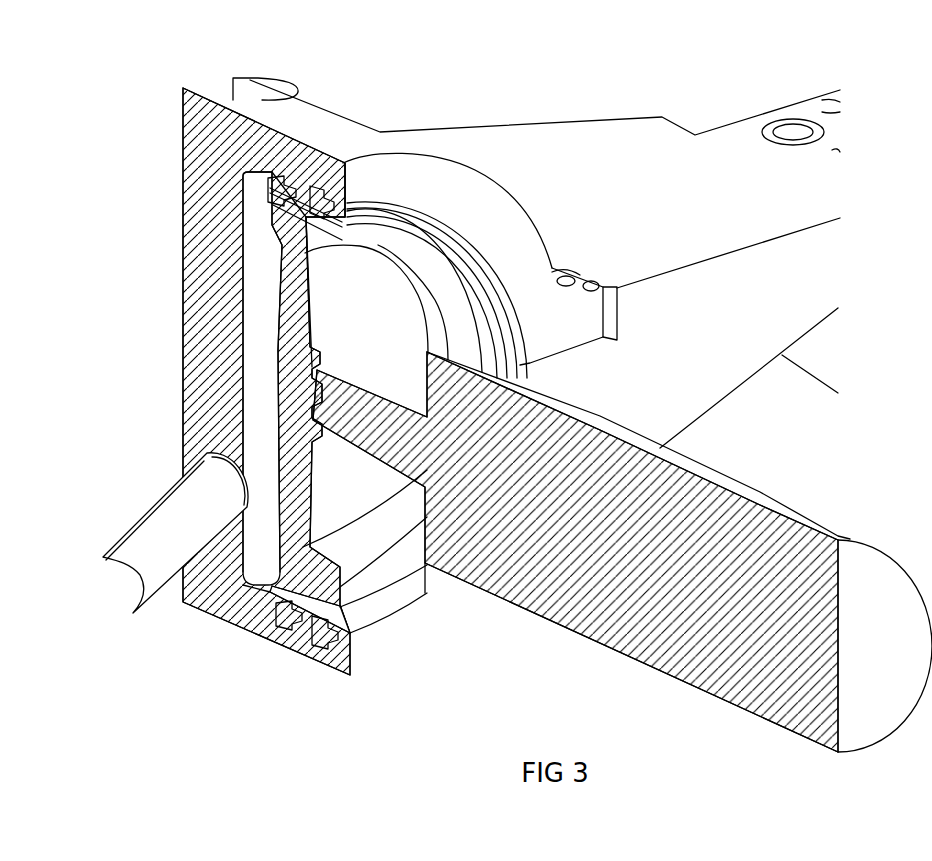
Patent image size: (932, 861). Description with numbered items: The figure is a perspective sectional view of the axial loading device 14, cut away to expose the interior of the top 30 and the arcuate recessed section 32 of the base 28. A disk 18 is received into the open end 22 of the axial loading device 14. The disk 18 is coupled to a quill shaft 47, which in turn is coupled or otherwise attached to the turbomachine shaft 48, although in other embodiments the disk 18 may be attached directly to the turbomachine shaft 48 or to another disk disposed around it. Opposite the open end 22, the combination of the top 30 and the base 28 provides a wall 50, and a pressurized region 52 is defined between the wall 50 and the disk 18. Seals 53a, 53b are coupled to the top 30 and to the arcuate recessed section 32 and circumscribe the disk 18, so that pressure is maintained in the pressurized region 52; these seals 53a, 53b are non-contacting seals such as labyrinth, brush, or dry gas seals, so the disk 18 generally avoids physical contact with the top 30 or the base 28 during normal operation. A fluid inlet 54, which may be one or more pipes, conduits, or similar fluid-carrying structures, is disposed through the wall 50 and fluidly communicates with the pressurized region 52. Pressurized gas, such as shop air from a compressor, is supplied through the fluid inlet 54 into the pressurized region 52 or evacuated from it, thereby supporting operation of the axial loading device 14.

The axial loading device 14 is at (660, 52).
The disk 18 is at (378, 330).
The open end 22 is at (385, 548).
The base 28 is at (196, 430).
The top 30 is at (318, 150).
The arcuate recessed section 32 is at (383, 613).
The quill shaft 47 is at (343, 443).
The turbomachine shaft 48 is at (722, 497).
The wall 50 is at (258, 295).
The pressurized region 52 is at (275, 240).
The seal 53a is at (290, 177).
The seal 53b is at (322, 188).
The fluid inlet 54 is at (140, 614).